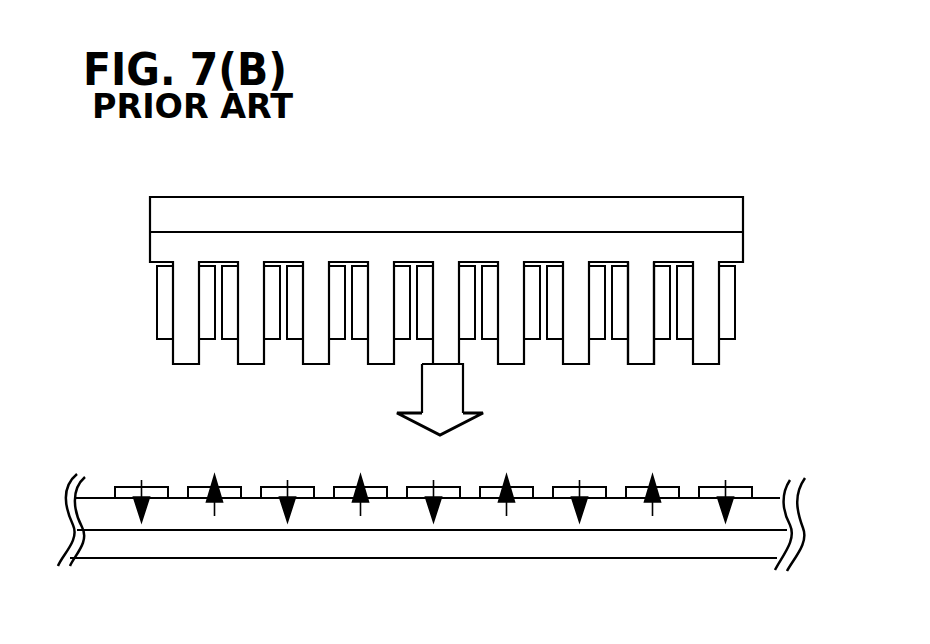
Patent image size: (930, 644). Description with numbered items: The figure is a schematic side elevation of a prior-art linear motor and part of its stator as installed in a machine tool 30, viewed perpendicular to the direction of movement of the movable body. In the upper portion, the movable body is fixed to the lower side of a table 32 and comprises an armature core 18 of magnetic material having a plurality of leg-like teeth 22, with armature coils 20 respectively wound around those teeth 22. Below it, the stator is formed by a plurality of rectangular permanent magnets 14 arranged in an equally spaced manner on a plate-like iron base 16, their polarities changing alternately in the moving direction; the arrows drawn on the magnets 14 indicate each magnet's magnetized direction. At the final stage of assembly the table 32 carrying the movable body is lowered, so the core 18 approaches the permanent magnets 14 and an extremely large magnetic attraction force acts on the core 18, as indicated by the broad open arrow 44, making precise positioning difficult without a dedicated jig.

The permanent magnets 14 is at (593, 493).
The iron base 16 is at (545, 517).
The armature core 18 is at (568, 245).
The armature coils 20 is at (553, 328).
The teeth 22 is at (637, 352).
The machine tool 30 is at (458, 545).
The table 32 is at (422, 208).
The broad open arrow 44 is at (443, 390).